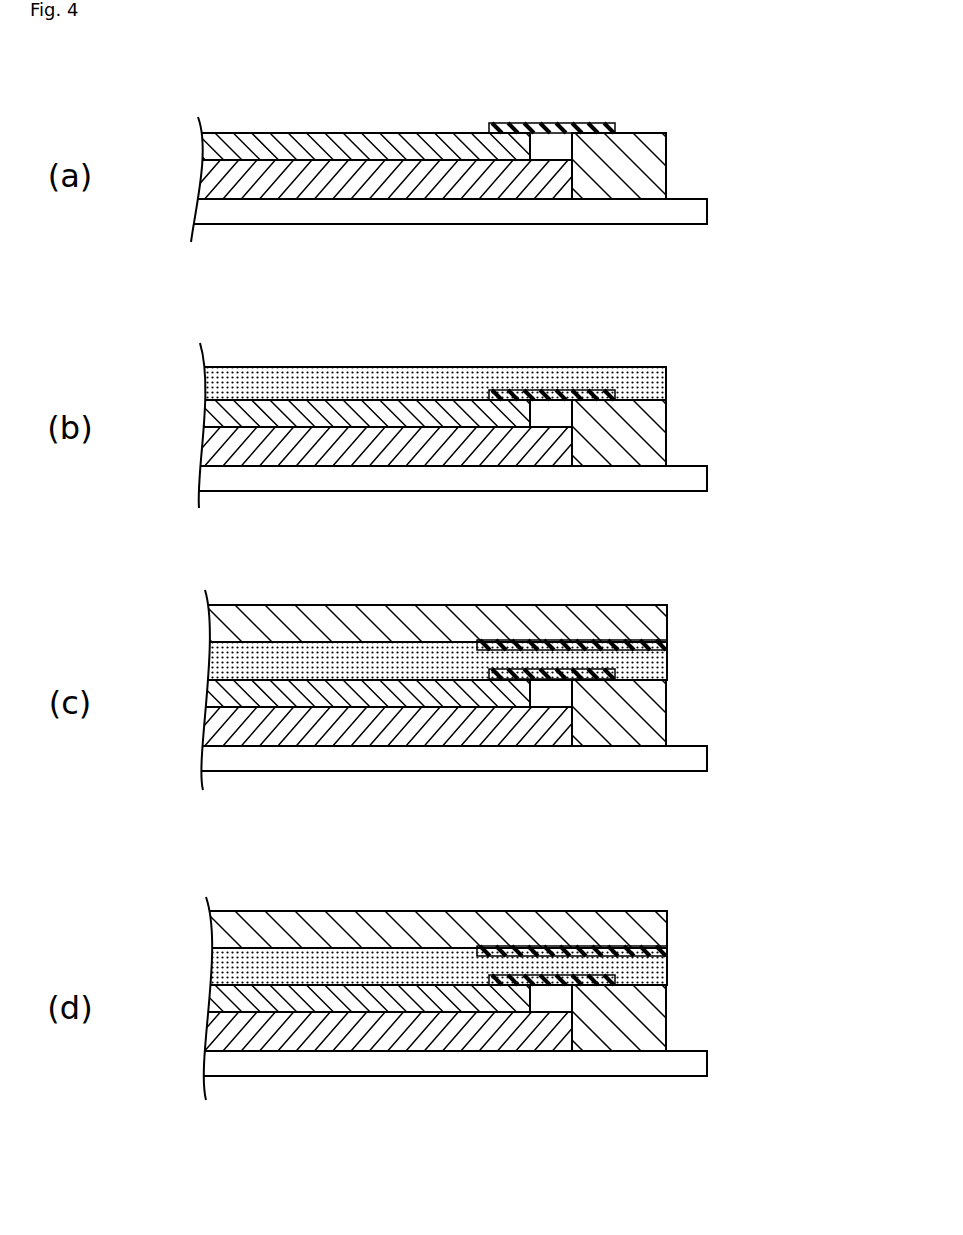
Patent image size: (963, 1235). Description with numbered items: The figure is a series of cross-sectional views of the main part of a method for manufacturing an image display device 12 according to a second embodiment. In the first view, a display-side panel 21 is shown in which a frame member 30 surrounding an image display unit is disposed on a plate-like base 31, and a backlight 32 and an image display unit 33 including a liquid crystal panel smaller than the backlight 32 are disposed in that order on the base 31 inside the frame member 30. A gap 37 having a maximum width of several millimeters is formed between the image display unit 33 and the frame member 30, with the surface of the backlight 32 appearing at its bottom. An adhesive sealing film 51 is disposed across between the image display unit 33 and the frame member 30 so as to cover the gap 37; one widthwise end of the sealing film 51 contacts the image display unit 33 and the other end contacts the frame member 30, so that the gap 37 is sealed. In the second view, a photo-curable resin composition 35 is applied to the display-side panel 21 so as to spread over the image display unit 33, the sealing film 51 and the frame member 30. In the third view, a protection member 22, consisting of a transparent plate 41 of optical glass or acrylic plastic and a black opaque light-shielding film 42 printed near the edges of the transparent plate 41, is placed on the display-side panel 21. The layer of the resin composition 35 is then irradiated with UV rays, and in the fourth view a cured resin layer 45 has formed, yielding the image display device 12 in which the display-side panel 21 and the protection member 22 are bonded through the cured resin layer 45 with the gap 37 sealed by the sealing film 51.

The image display device 12 is at (127, 881).
The display-side panel 21 is at (700, 145).
The protection member 22 is at (688, 603).
The frame member 30 is at (666, 173).
The base 31 is at (207, 215).
The backlight 32 is at (205, 182).
The image display unit 33 is at (205, 146).
The photo-curable resin composition 35 is at (208, 381).
The gap 37 is at (551, 146).
The transparent plate 41 is at (668, 612).
The light-shielding film 42 is at (668, 640).
The cured resin layer 45 is at (216, 969).
The sealing film 51 is at (604, 123).